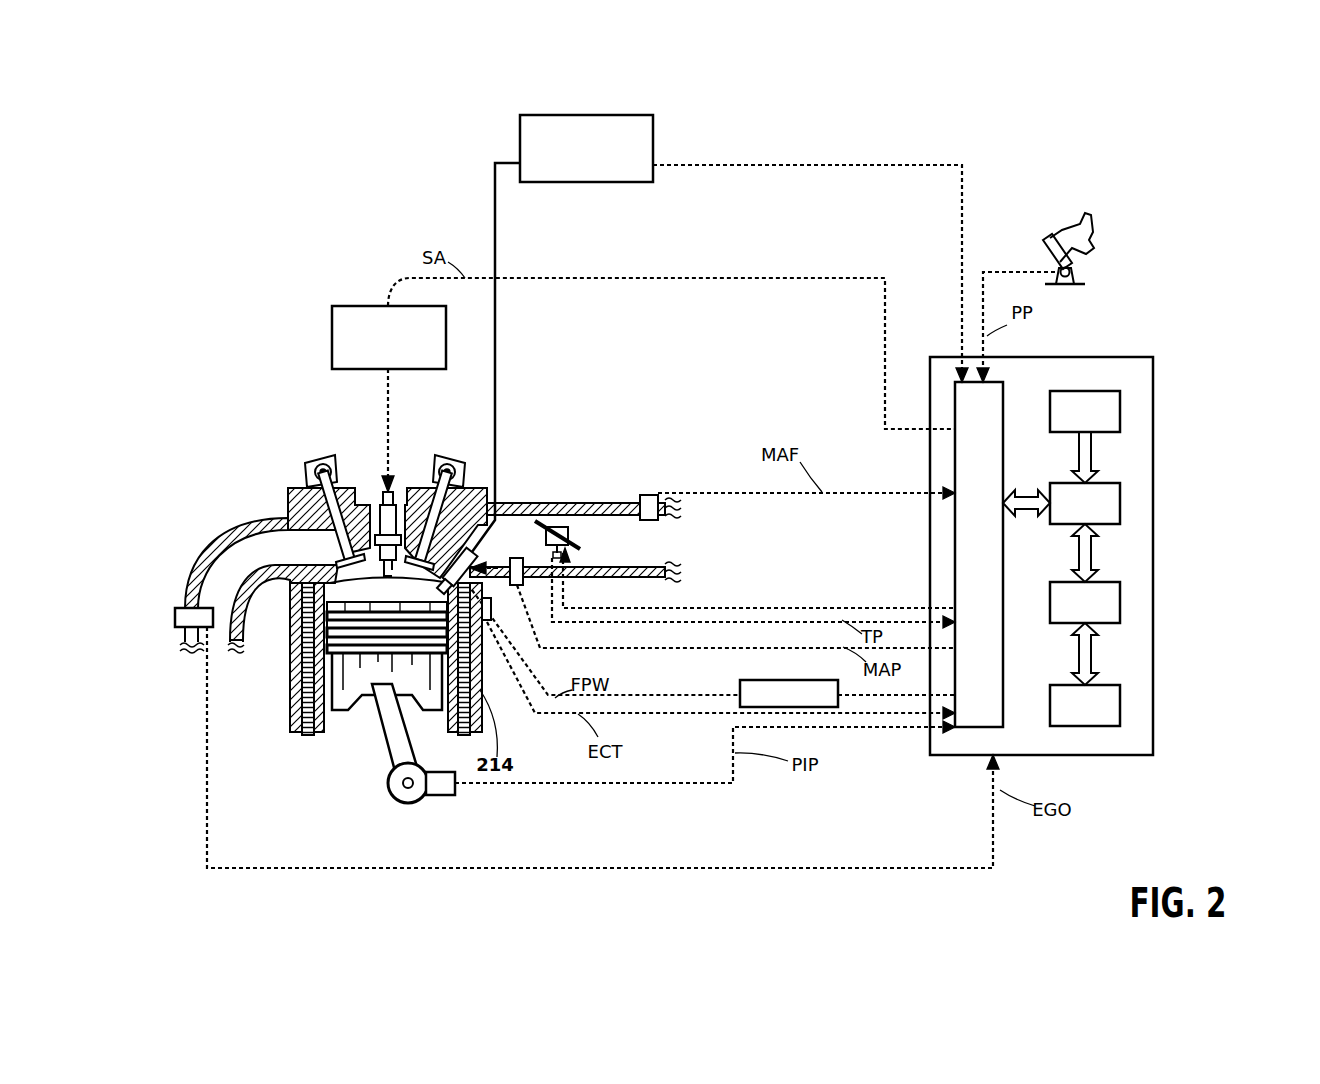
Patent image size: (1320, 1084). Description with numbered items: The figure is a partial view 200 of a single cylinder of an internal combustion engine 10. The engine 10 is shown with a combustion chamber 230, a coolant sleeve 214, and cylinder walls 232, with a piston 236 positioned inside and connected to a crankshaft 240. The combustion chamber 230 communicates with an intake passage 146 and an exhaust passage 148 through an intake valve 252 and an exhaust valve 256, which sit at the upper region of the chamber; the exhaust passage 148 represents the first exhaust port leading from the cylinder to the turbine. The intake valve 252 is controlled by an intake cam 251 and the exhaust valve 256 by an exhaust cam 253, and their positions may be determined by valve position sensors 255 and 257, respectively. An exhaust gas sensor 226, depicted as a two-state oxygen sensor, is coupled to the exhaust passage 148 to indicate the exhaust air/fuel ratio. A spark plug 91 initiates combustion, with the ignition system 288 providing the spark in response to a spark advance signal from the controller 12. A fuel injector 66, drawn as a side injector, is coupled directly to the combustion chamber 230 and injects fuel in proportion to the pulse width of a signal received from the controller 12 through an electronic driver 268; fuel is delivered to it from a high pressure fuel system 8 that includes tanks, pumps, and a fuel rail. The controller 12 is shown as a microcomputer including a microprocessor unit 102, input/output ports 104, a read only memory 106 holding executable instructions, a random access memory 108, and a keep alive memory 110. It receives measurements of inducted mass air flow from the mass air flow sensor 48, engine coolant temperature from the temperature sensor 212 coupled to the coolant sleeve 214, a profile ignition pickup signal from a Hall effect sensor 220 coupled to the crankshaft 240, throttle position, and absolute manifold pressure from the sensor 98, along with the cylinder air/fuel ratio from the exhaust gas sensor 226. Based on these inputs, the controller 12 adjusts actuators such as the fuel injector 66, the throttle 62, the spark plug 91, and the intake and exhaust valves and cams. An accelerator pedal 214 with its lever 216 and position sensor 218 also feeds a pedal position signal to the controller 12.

The partial view 200 is at (1240, 138).
The internal combustion engine 10 is at (222, 330).
The fuel system 8 is at (653, 130).
The ignition system 288 is at (346, 306).
The coolant sleeve 214 is at (1095, 237).
The pedal lever 216 is at (1045, 248).
The pedal position sensor 218 is at (1078, 272).
The controller 12 is at (1150, 360).
The input/output ports 104 is at (1005, 392).
The read only memory 106 is at (1120, 408).
The microprocessor unit 102 is at (1120, 500).
The random access memory 108 is at (1120, 600).
The keep alive memory 110 is at (1120, 702).
The electronic driver 268 is at (742, 683).
The exhaust passage 148 is at (222, 562).
The exhaust gas sensor 226 is at (175, 614).
The valve position sensor 257 is at (308, 478).
The exhaust cam 253 is at (336, 456).
The intake cam 251 is at (437, 456).
The valve position sensor 255 is at (462, 468).
The exhaust valve 256 is at (345, 560).
The intake valve 252 is at (398, 545).
The spark plug 91 is at (380, 510).
The fuel injector 66 is at (445, 578).
The intake passage 146 is at (497, 550).
The throttle 62 is at (558, 524).
The mass air flow sensor 48 is at (649, 495).
The manifold pressure sensor 98 is at (524, 590).
The temperature sensor 212 is at (495, 625).
The piston 236 is at (372, 684).
The cylinder walls 232 is at (327, 722).
The combustion chamber 230 is at (330, 590).
The crankshaft 240 is at (398, 800).
The Hall effect sensor 220 is at (440, 796).